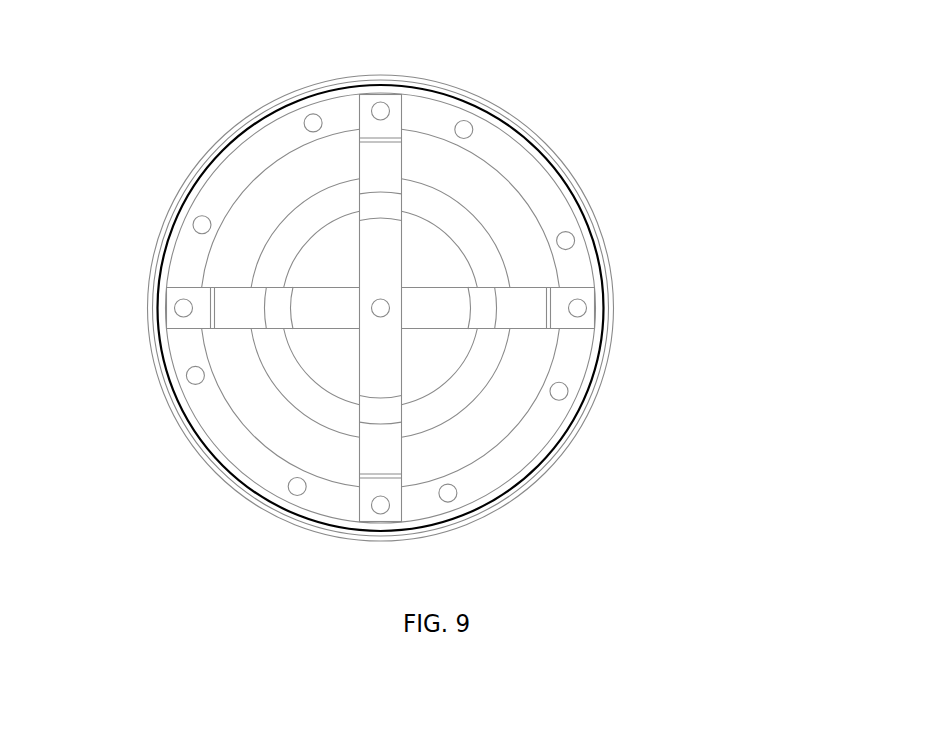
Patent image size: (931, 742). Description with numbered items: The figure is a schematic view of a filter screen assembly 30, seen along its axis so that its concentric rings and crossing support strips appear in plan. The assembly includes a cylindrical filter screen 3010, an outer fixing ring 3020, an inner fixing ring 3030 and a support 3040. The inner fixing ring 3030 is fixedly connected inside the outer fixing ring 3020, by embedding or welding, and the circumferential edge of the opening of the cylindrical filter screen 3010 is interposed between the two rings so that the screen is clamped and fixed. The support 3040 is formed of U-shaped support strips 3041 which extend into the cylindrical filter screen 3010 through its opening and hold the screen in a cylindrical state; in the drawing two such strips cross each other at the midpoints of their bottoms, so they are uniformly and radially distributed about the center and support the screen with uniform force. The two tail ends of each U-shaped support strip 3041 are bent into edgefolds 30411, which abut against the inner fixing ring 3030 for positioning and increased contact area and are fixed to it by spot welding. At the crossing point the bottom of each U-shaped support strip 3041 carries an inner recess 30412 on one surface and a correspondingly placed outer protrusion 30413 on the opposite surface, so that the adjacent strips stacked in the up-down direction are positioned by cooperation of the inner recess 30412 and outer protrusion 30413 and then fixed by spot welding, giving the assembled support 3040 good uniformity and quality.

The filter screen assembly 30 is at (281, 47).
The cylindrical filter screen 3010 is at (320, 252).
The outer fixing ring 3020 is at (562, 160).
The inner fixing ring 3030 is at (496, 138).
The support 3040 is at (442, 331).
The U-shaped support strip 3041 is at (233, 322).
The edgefold 30411 is at (388, 99).
The inner recess 30412 is at (594, 358).
The outer protrusion 30413 is at (383, 308).